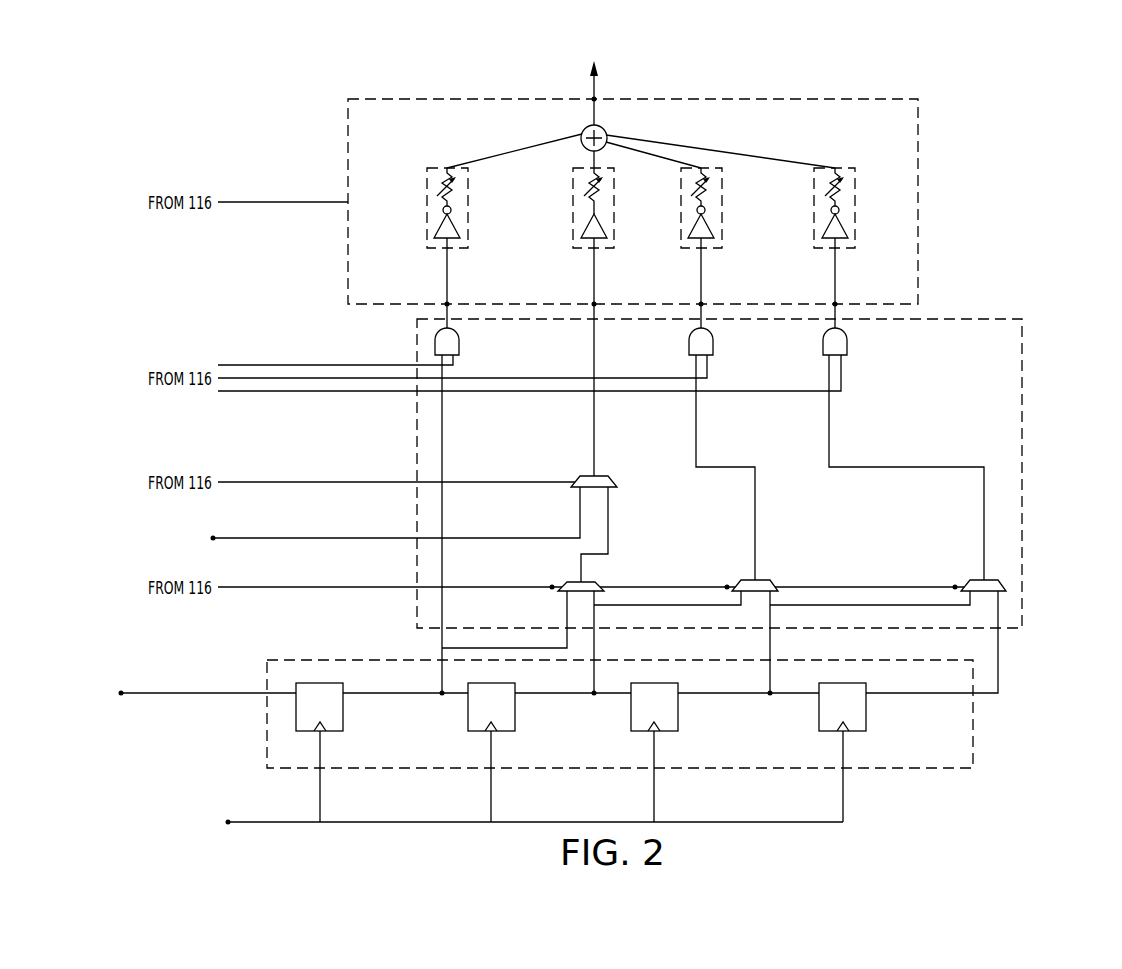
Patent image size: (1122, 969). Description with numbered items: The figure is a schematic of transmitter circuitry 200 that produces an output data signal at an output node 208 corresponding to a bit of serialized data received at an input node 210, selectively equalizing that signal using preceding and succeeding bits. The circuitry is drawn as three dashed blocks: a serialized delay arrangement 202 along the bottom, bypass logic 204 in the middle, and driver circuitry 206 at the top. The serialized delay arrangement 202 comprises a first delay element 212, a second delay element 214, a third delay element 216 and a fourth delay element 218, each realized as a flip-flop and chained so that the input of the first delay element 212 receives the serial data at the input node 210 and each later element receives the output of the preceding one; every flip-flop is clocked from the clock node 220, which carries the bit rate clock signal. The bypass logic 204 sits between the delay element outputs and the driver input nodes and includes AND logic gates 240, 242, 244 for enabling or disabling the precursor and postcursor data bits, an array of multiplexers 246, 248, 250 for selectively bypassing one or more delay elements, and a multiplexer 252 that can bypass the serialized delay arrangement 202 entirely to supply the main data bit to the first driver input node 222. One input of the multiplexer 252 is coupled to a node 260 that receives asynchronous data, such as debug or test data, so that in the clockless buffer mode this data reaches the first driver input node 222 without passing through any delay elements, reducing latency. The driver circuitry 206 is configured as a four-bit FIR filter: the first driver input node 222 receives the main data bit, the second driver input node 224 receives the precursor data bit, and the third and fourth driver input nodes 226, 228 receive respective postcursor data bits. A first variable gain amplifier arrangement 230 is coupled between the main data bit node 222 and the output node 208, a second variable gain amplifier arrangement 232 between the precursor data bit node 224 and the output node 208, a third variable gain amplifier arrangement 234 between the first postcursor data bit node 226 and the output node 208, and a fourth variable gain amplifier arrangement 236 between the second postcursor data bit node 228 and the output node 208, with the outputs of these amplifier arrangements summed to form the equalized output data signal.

The transmitter circuitry 200 is at (960, 103).
The serialized delay arrangement 202 is at (973, 720).
The bypass logic 204 is at (1022, 452).
The driver circuitry 206 is at (918, 200).
The output node 208 is at (594, 99).
The input node 210 is at (121, 693).
The first delay element 212 is at (312, 683).
The second delay element 214 is at (498, 734).
The third delay element 216 is at (661, 734).
The fourth delay element 218 is at (850, 734).
The clock node 220 is at (228, 822).
The first driver input node 222 is at (594, 304).
The second driver input node 224 is at (447, 304).
The third driver input node 226 is at (701, 304).
The fourth driver input node 228 is at (835, 304).
The first variable gain amplifier arrangement 230 is at (573, 213).
The second variable gain amplifier arrangement 232 is at (427, 213).
The third variable gain amplifier arrangement 234 is at (681, 213).
The fourth variable gain amplifier arrangement 236 is at (814, 213).
The logic gate 240 is at (459, 341).
The logic gate 242 is at (713, 341).
The logic gate 244 is at (847, 341).
The multiplexer 246 is at (595, 582).
The multiplexer 248 is at (768, 580).
The multiplexer 250 is at (1004, 585).
The multiplexer 252 is at (607, 478).
The node 260 is at (213, 538).